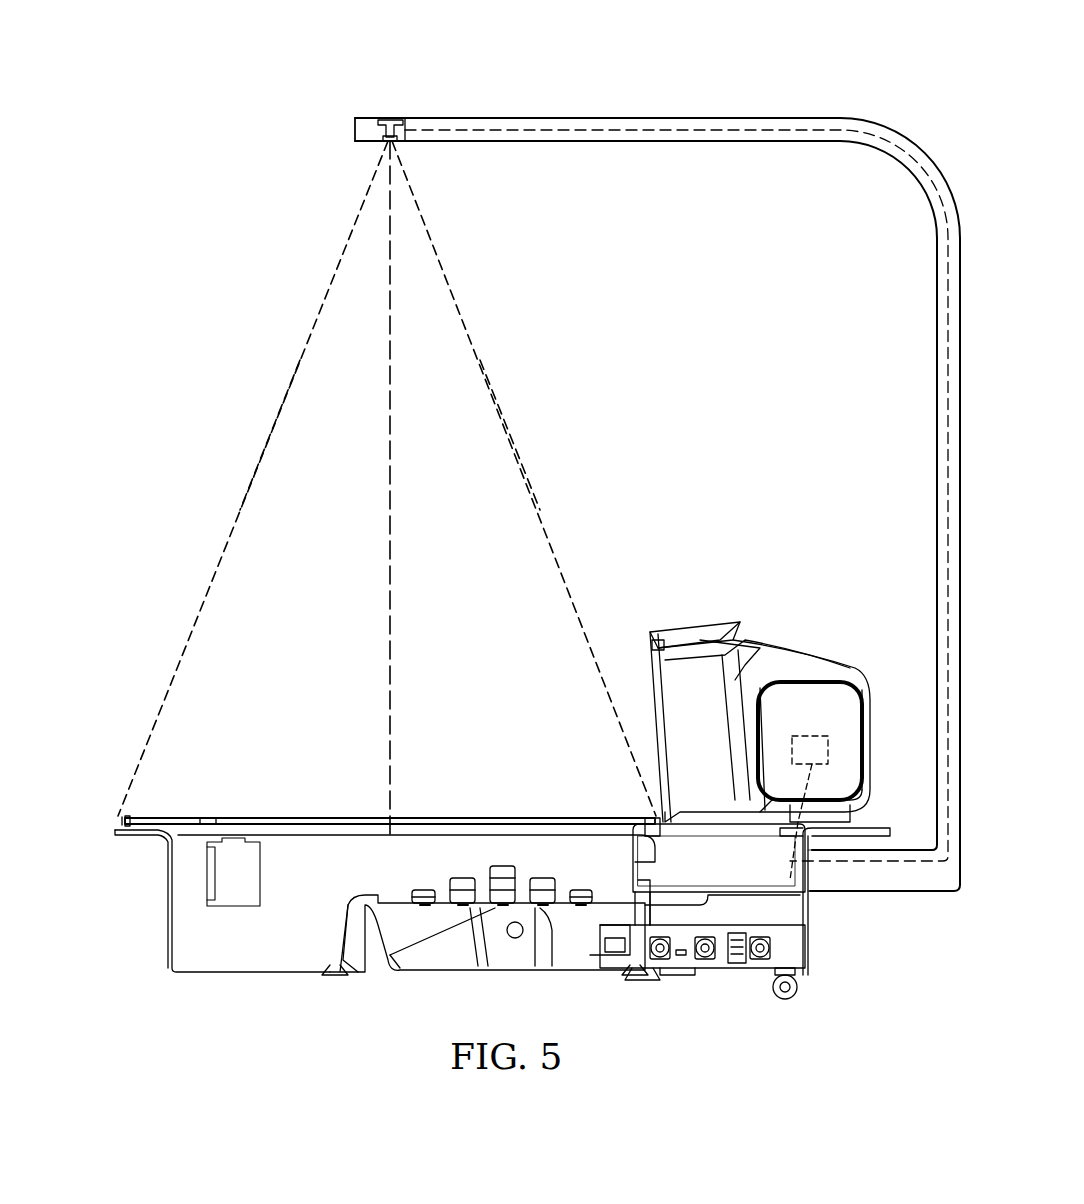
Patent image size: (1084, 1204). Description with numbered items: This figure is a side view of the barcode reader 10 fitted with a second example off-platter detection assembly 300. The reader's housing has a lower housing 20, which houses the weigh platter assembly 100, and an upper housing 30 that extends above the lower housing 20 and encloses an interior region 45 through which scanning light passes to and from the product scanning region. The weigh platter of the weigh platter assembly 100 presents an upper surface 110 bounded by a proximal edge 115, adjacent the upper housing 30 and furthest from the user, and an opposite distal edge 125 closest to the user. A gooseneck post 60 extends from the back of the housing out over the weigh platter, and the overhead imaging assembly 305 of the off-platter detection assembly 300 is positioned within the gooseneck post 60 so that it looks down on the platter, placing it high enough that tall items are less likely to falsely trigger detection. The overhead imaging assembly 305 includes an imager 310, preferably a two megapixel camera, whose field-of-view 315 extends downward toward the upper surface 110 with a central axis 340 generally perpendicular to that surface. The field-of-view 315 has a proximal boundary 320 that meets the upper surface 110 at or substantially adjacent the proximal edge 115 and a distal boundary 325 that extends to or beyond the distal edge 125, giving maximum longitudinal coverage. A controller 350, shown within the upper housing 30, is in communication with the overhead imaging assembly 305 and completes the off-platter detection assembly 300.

The barcode reader 10 is at (258, 42).
The lower housing 20 is at (168, 938).
The upper housing 30 is at (693, 620).
The interior region 45 is at (742, 864).
The gooseneck post 60 is at (714, 116).
The weigh platter assembly 100 is at (278, 815).
The upper surface 110 is at (208, 817).
The proximal edge 115 is at (650, 817).
The distal edge 125 is at (125, 821).
The off-platter detection assembly 300 is at (390, 116).
The overhead imaging assembly 305 is at (340, 131).
The imager 310 is at (398, 139).
The field-of-view 315 is at (338, 363).
The proximal boundary 320 is at (525, 474).
The distal boundary 325 is at (255, 477).
The central axis 340 is at (389, 491).
The controller 350 is at (806, 736).